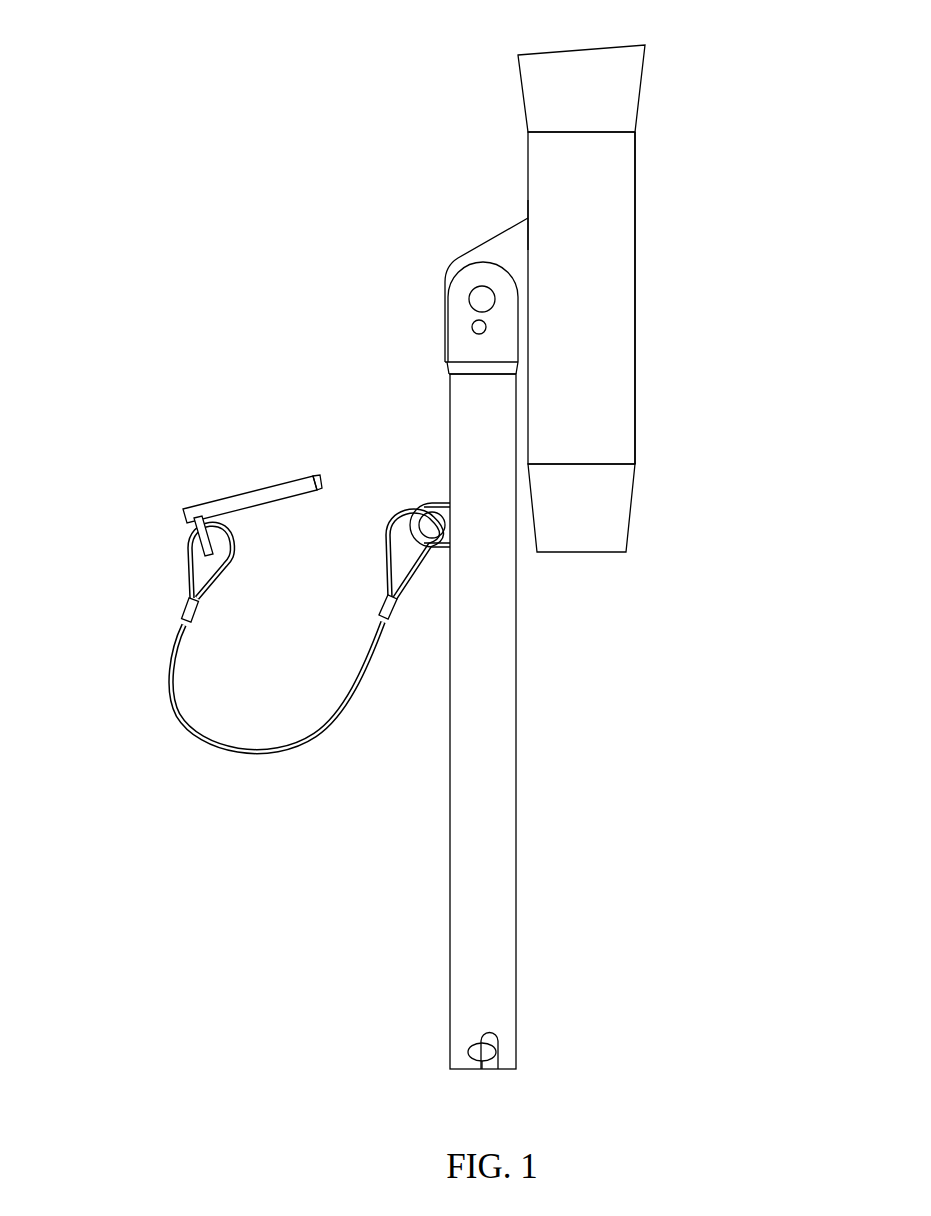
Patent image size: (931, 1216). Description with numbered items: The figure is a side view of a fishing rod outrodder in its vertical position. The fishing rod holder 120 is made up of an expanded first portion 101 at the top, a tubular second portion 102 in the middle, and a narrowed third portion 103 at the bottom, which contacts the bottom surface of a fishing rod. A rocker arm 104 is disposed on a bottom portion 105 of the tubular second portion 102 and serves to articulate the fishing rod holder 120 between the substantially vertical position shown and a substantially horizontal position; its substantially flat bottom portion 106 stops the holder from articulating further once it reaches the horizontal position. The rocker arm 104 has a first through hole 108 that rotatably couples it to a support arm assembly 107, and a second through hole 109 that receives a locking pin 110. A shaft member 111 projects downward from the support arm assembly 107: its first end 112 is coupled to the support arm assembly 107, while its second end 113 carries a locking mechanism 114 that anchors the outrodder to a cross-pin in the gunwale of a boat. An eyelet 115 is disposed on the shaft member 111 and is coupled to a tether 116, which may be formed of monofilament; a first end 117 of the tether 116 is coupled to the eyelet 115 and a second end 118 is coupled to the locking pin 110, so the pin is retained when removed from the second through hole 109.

The expanded first portion 101 is at (615, 88).
The tubular second portion 102 is at (600, 290).
The fishing rod holder 120 is at (632, 323).
The narrowed third portion 103 is at (600, 517).
The rocker arm 104 is at (497, 255).
The bottom portion 105 is at (527, 235).
The substantially flat bottom portion 106 is at (440, 278).
The support arm assembly 107 is at (465, 346).
The first through hole 108 is at (465, 300).
The second through hole 109 is at (465, 325).
The locking pin 110 is at (245, 497).
The shaft member 111 is at (490, 762).
The first end 112 is at (473, 370).
The second end 113 is at (490, 1008).
The locking mechanism 114 is at (465, 1045).
The eyelet 115 is at (435, 556).
The tether 116 is at (200, 733).
The first end 117 is at (382, 557).
The second end 118 is at (185, 572).